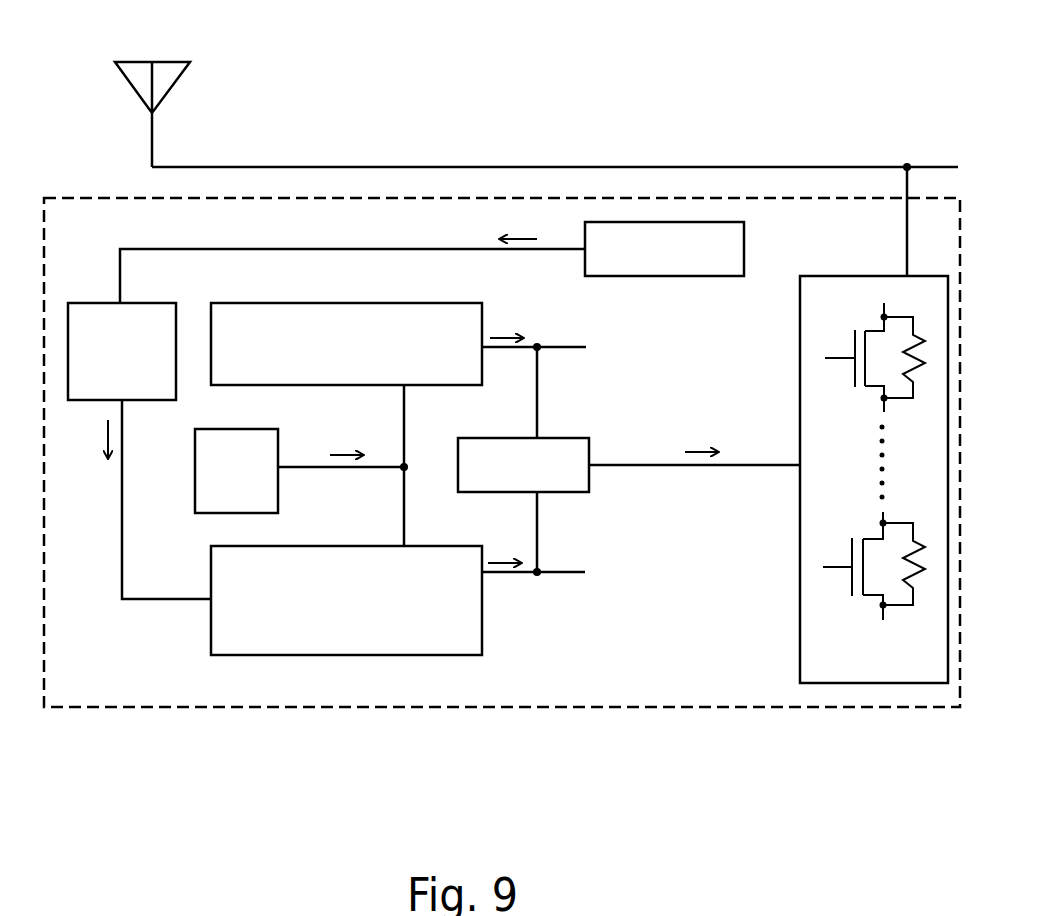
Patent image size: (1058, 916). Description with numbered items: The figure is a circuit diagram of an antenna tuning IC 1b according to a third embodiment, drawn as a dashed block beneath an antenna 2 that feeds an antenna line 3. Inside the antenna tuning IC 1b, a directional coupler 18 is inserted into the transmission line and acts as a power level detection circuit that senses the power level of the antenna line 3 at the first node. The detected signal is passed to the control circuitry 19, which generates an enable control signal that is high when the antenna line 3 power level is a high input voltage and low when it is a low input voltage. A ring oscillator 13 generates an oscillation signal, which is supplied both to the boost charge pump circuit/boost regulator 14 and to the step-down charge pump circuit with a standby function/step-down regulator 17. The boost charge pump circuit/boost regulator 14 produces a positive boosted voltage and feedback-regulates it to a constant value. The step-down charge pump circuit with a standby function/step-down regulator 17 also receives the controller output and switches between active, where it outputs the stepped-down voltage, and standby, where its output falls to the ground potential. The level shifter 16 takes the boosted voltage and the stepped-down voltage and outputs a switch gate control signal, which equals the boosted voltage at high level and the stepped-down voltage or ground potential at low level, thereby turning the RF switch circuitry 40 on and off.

The antenna tuning IC 1b is at (55, 198).
The antenna 2 is at (190, 62).
The antenna line 3 is at (553, 163).
The ring oscillator 13 is at (215, 429).
The boost charge pump circuit/boost regulator 14 is at (482, 303).
The level shifter 16 is at (565, 438).
The step-down charge pump circuit with a standby function/step-down regulator 17 is at (432, 546).
The directional coupler 18 is at (744, 232).
The control circuitry (controller) 19 is at (148, 303).
The RF switch circuitry 40 is at (830, 275).